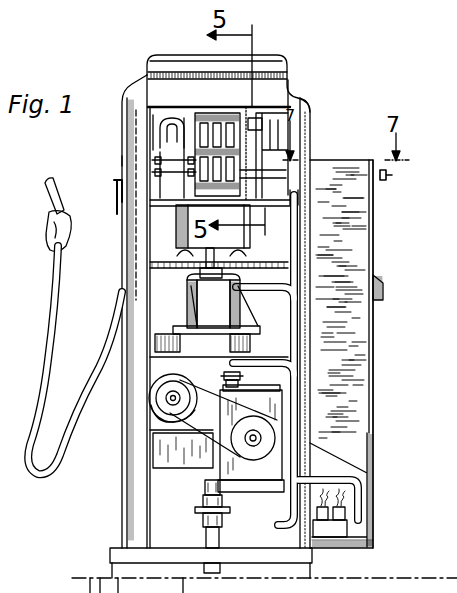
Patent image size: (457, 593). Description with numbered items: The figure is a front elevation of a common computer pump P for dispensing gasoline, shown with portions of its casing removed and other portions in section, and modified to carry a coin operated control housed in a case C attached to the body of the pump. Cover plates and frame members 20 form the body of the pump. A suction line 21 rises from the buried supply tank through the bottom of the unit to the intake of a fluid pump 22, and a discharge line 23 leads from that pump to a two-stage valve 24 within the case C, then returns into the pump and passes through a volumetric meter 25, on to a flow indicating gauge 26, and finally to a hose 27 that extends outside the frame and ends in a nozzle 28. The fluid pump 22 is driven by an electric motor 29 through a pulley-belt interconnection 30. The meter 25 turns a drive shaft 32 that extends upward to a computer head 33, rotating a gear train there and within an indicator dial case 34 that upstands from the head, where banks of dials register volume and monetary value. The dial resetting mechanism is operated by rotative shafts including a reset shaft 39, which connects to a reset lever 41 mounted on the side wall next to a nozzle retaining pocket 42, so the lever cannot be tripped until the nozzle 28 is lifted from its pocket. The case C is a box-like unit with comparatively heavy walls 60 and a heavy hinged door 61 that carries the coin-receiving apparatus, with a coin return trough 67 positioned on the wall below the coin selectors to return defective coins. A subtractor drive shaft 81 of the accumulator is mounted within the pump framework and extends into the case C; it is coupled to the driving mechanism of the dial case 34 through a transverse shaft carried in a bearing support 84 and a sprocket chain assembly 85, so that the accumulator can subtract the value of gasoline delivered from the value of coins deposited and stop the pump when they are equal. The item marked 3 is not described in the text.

The computer pump P is at (119, 90).
The cover plates and frame members 20 is at (303, 86).
The suction line 21 is at (219, 549).
The fluid pump 22 is at (243, 470).
The discharge line 23 is at (190, 106).
The two-stage valve 24 is at (336, 536).
The volumetric meter 25 is at (219, 315).
The flow indicating gauge 26 is at (312, 110).
The hose 27 is at (105, 346).
The nozzle 28 is at (66, 232).
The electric motor 29 is at (172, 393).
The pulley-belt interconnection 30 is at (213, 384).
The drive shaft 32 is at (208, 270).
The computer head 33 is at (177, 226).
The indicator dial case 34 is at (207, 117).
The reset lever 3 is at (174, 154).
The reset shaft 39 is at (166, 116).
The reset lever 41 is at (120, 188).
The nozzle retaining pocket 42 is at (123, 162).
The walls 60 is at (360, 342).
The door 61 is at (374, 259).
The coin return trough 67 is at (384, 288).
The subtractor drive shaft 81 is at (299, 200).
The sprocket chain assembly 85 is at (251, 124).
The case C is at (389, 175).
The bearing support 84 is at (442, 587).